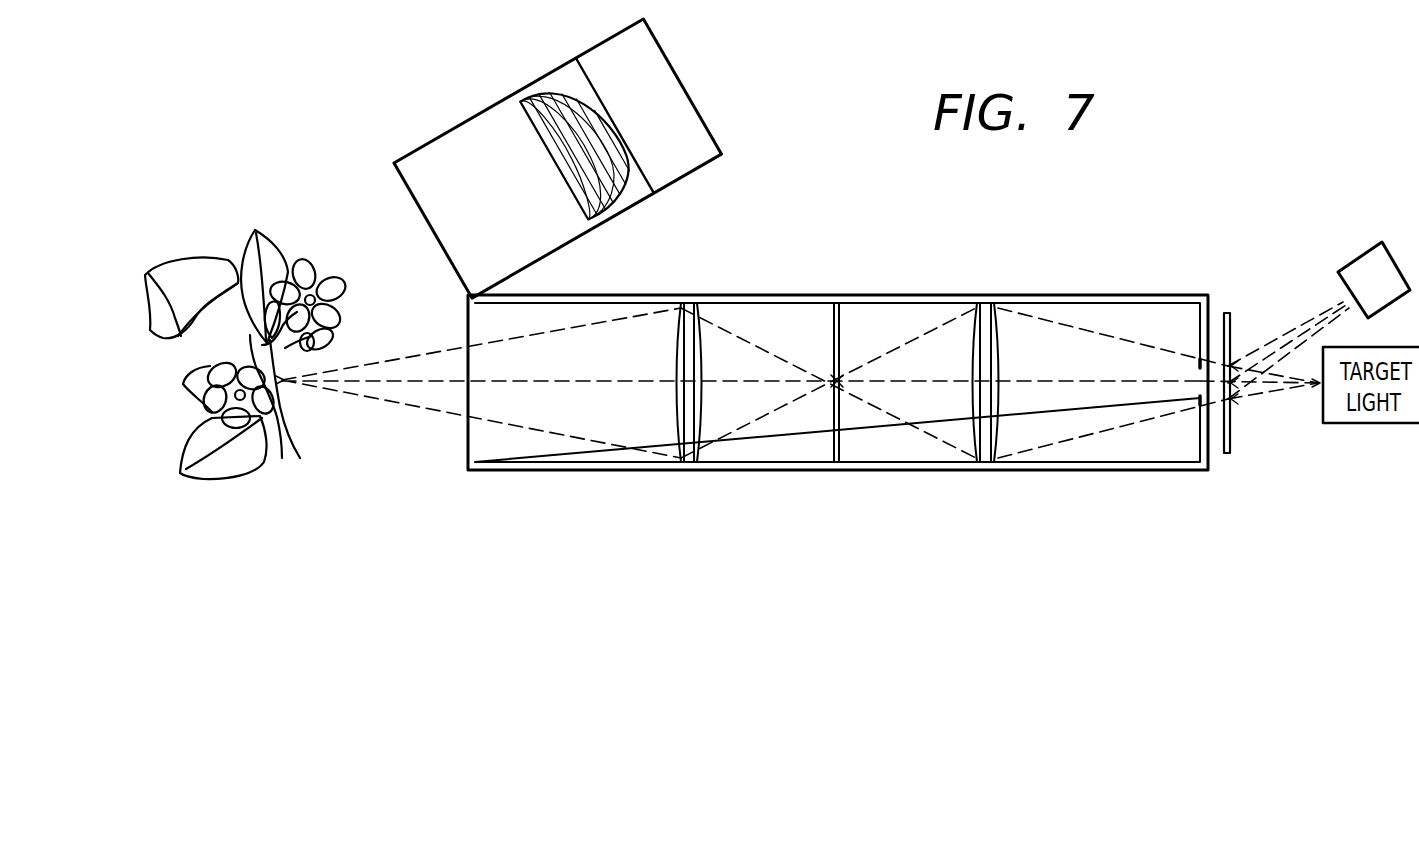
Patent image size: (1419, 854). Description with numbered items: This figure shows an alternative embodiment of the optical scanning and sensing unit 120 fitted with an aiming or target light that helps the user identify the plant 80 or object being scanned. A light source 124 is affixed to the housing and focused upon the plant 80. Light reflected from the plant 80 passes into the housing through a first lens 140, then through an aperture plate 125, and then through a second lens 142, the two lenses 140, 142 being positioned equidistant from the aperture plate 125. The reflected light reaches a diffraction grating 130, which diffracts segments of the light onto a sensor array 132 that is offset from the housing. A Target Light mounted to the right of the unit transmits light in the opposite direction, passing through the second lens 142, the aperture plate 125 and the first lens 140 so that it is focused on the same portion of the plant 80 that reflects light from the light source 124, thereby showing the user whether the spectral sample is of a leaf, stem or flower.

The plant 80 is at (221, 243).
The scanning and sensing unit 120 is at (972, 254).
The light source 124 is at (521, 204).
The aperture plate 125 is at (840, 445).
The diffraction grating 130 is at (1232, 422).
The sensor array 132 is at (1358, 254).
The lens 140 is at (678, 399).
The second lens 142 is at (999, 399).